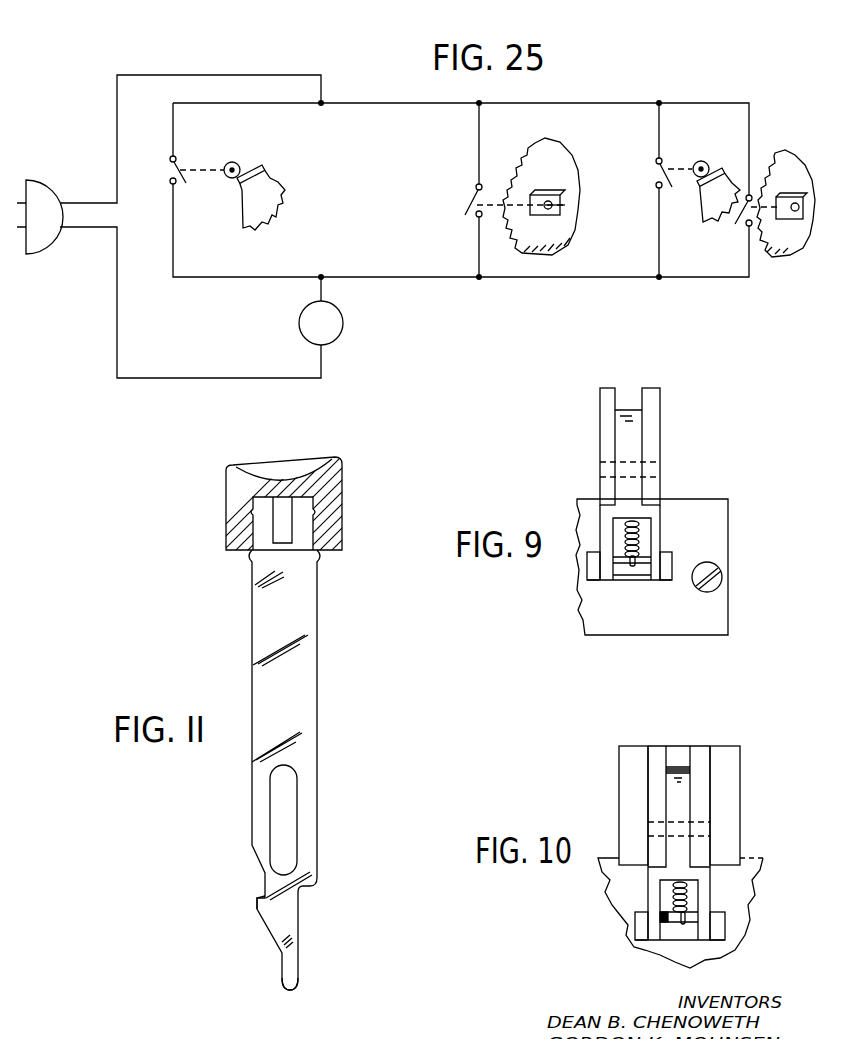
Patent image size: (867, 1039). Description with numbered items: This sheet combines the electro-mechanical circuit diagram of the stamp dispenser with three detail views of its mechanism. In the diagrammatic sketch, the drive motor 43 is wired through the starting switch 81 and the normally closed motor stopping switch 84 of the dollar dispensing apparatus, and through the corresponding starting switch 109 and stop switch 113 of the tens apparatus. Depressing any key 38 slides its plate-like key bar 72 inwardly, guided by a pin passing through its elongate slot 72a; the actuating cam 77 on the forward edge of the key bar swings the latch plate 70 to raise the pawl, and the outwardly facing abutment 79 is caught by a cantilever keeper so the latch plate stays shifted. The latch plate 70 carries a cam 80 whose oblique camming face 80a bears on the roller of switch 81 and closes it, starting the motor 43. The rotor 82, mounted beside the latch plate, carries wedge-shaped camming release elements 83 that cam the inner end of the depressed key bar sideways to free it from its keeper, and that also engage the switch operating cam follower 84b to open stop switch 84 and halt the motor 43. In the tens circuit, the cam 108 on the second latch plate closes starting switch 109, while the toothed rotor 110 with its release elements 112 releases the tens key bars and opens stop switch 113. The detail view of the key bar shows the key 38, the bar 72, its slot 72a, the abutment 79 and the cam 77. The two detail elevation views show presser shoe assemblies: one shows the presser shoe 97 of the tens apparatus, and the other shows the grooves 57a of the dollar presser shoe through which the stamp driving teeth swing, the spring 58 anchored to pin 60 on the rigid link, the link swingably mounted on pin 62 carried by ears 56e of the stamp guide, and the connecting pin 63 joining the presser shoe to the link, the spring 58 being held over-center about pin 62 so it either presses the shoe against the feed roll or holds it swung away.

In FIG. 25, the drive motor and speed reducing gearing mechanism 43 is at (344, 331).
In FIG. 25, the switch 81 is at (178, 167).
In FIG. 25, the camming face 80a is at (250, 166).
In FIG. 25, the cam 80 is at (265, 170).
In FIG. 25, the latch plate 70 is at (278, 190).
In FIG. 25, the motor stopping switch 84 is at (470, 203).
In FIG. 25, the rotor 82 is at (548, 167).
In FIG. 25, the camming release elements 83 is at (560, 210).
In FIG. 25, the switch operating cam follower 84b is at (543, 215).
In FIG. 25, the starting switch 109 is at (665, 175).
In FIG. 25, the cam 108 is at (710, 166).
In FIG. 25, the stop switch 113 is at (738, 216).
In FIG. 25, the rotor 110 is at (785, 245).
In FIG. 25, the camming release elements 112 is at (790, 195).
In FIG. 11, the key 38 is at (334, 527).
In FIG. 11, the key bar 72 is at (305, 711).
In FIG. 11, the elongate slot 72a is at (290, 856).
In FIG. 11, the abutment 79 is at (258, 905).
In FIG. 11, the actuating cam 77 is at (268, 935).
In FIG. 9, the presser shoe 97 is at (600, 455).
In FIG. 10, the grooves 57a is at (619, 805).
In FIG. 10, the connecting pin 63 is at (706, 843).
In FIG. 10, the ears 56e is at (632, 940).
In FIG. 10, the spring 58 is at (688, 893).
In FIG. 10, the pin 60 is at (693, 915).
In FIG. 10, the pin 62 is at (672, 928).